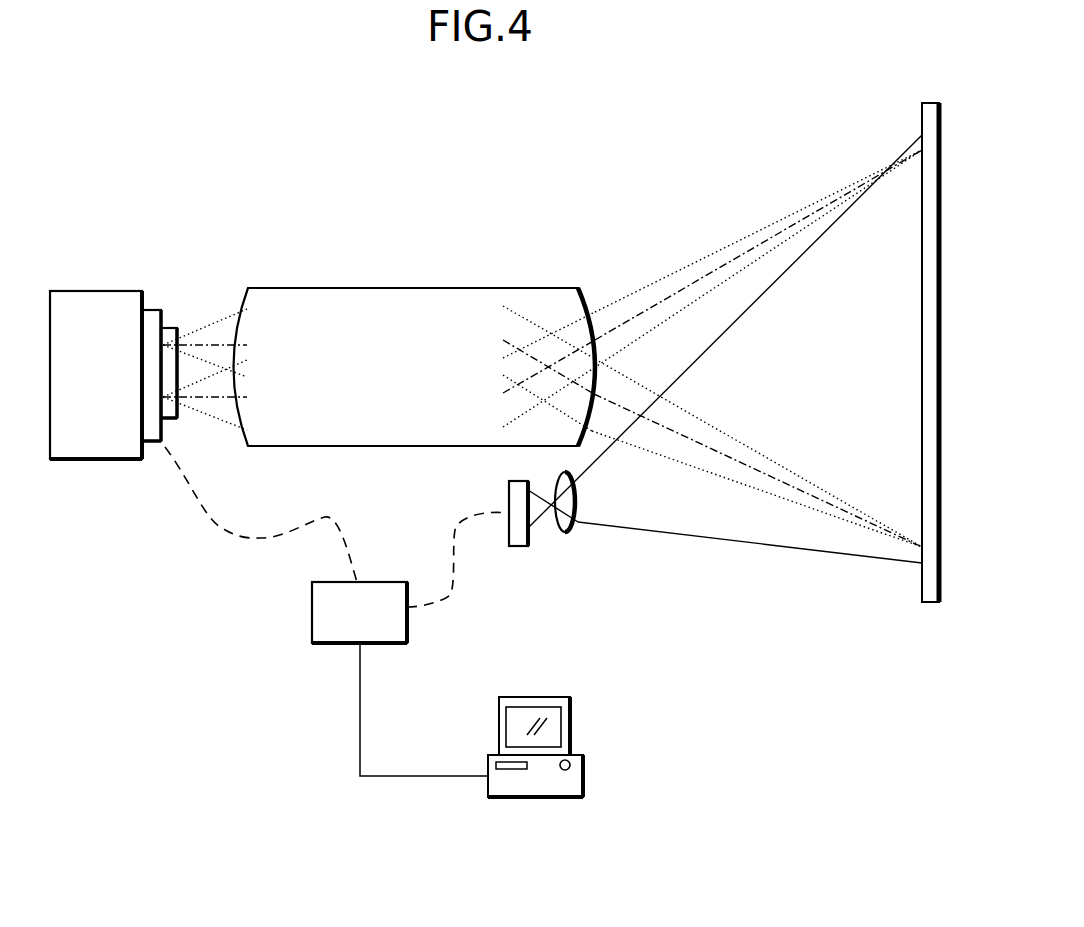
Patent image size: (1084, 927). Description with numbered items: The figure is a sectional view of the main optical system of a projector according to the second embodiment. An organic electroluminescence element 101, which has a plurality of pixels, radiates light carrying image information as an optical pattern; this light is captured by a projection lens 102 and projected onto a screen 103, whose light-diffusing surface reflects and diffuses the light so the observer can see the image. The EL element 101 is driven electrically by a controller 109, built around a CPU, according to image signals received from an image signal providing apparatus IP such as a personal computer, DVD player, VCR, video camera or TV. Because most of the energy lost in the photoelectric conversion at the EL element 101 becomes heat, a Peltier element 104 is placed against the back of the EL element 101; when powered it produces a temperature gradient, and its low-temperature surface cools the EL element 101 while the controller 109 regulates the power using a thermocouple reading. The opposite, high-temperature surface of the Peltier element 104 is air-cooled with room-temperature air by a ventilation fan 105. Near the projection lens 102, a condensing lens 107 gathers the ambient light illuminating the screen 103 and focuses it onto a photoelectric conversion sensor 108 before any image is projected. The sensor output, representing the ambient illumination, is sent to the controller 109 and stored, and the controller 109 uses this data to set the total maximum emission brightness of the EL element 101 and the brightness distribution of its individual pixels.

The organic electroluminescence (EL) element 101 is at (172, 325).
The projection lens 102 is at (387, 296).
The screen 103 is at (920, 118).
The Peltier element 104 is at (152, 444).
The ventilation fan 105 is at (93, 452).
The condensing lens 107 is at (570, 533).
The photoelectric conversion sensor 108 is at (518, 548).
The controller 109 is at (312, 618).
The image signal providing apparatus IP is at (572, 732).